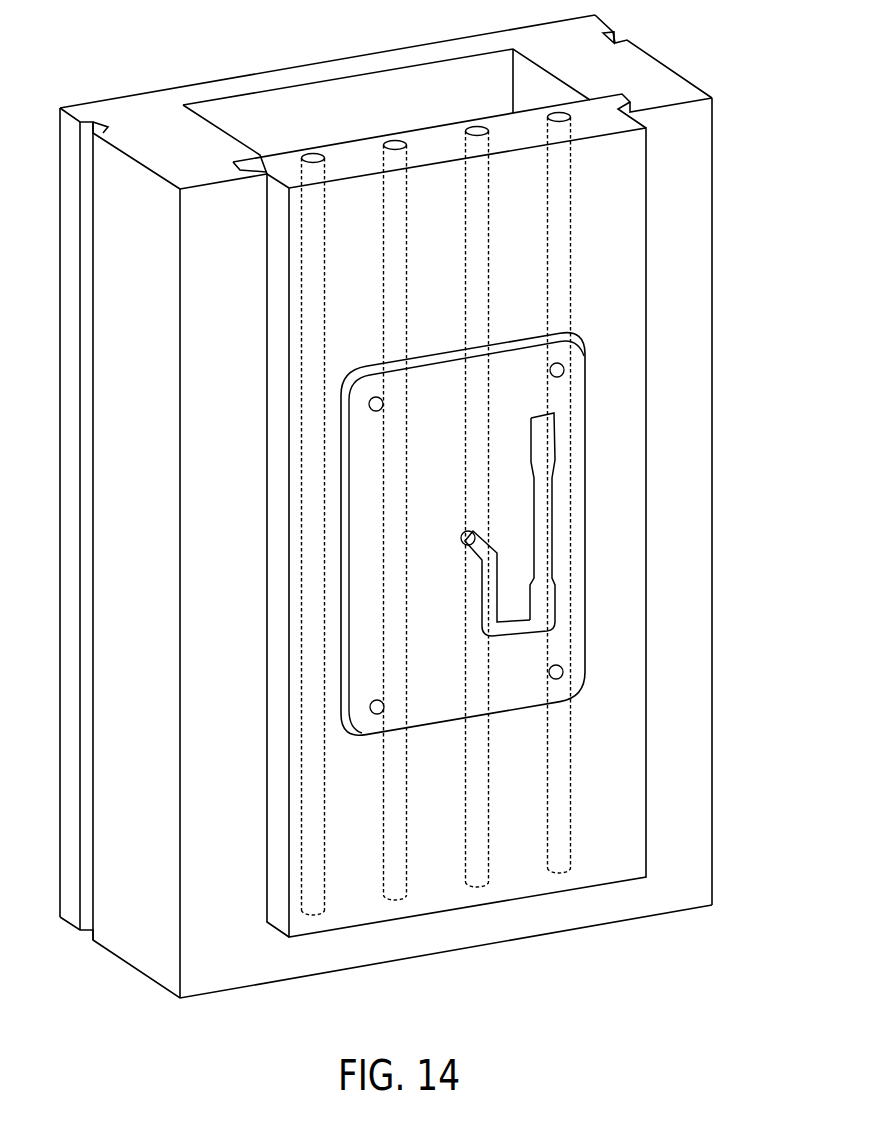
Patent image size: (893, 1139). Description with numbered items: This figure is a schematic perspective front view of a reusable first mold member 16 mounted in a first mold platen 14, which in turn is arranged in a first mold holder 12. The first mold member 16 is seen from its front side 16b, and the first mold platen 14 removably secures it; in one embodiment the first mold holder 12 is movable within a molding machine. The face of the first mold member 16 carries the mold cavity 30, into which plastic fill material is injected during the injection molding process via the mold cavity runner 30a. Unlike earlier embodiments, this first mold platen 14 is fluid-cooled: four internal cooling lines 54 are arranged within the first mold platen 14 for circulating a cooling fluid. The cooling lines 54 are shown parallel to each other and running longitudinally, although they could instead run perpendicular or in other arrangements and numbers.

The first mold holder 12 is at (628, 56).
The first mold platen 14 is at (622, 225).
The first mold member 16 is at (583, 410).
The front side 16b is at (517, 680).
The mold cavity 30 is at (542, 520).
The mold cavity runner 30a is at (507, 632).
The internal cooling lines 54 is at (319, 160).